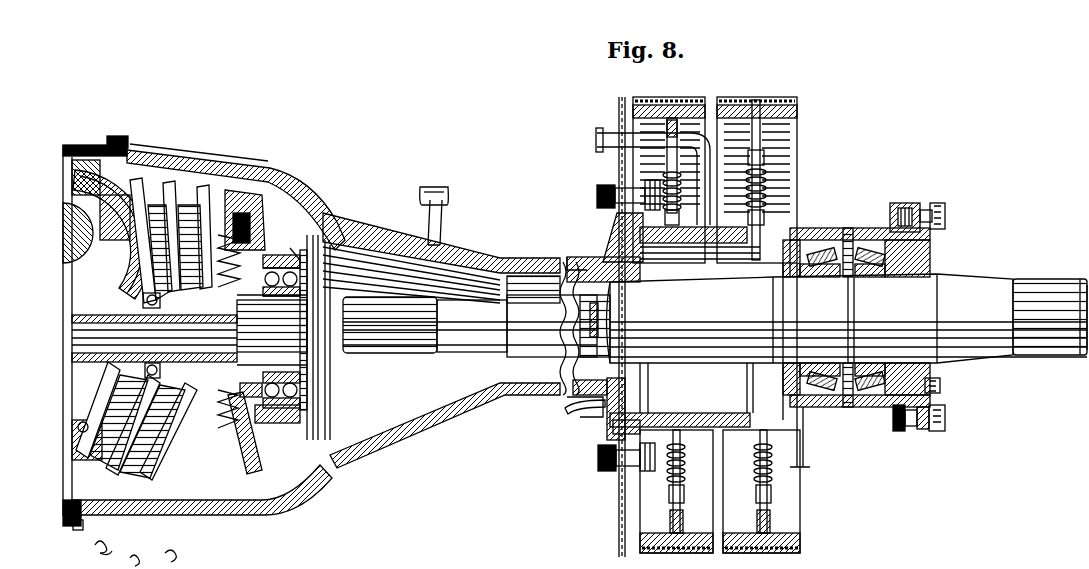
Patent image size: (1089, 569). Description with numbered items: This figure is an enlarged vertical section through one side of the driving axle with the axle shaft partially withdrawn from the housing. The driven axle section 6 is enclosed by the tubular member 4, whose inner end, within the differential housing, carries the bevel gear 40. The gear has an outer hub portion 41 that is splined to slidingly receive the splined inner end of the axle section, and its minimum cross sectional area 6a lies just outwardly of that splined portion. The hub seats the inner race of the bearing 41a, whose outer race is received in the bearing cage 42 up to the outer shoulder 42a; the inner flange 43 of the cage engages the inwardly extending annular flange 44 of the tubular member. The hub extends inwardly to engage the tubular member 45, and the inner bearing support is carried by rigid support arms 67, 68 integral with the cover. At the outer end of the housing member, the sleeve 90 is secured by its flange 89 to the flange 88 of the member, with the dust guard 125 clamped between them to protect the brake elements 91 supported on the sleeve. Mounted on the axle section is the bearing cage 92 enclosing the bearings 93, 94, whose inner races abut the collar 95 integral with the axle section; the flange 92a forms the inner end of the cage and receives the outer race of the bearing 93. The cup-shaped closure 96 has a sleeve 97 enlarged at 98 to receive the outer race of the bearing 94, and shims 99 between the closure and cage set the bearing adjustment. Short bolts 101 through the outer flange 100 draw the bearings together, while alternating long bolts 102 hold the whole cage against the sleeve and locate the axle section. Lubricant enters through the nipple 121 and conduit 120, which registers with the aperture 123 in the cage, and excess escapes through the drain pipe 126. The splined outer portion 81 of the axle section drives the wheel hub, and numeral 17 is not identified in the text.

The flywheel 17 is at (70, 222).
The rigid support arm 67 is at (195, 235).
The inwardly extending annular flange 44 is at (290, 248).
The tubular member 45 is at (98, 360).
The rigid support arm 68 is at (157, 421).
The bevel gear 40 is at (235, 440).
The inner flange 43 is at (270, 423).
The bearing cage 42 is at (303, 425).
The outer hub portion 41 is at (325, 372).
The bearing 41a is at (318, 390).
The outer shoulder 42a is at (318, 408).
The tubular member 4 is at (400, 425).
The minimum cross sectional area 6a is at (476, 326).
The driven axle section 6 is at (847, 318).
The conduit 120 is at (690, 105).
The nipple 121 is at (605, 138).
The drain pipe 126 is at (568, 410).
The flange 88 is at (608, 425).
The flange 89 is at (625, 472).
The dust guard 125 is at (620, 515).
The sleeve 90 is at (675, 410).
The brake elements 91 is at (720, 499).
The bearing 93 is at (830, 240).
The aperture 123 is at (850, 228).
The bearing 94 is at (875, 240).
The outer flange 100 is at (900, 203).
The long bolts 102 is at (936, 203).
The flange 92a is at (795, 277).
The collar 95 is at (856, 310).
The splined outer portion 81 is at (1040, 283).
The bearing cage 92 is at (845, 408).
The closure 96 is at (940, 402).
The enlarged portion 98 is at (890, 432).
The sleeve 97 is at (908, 428).
The shims 99 is at (920, 430).
The short bolts 101 is at (935, 432).